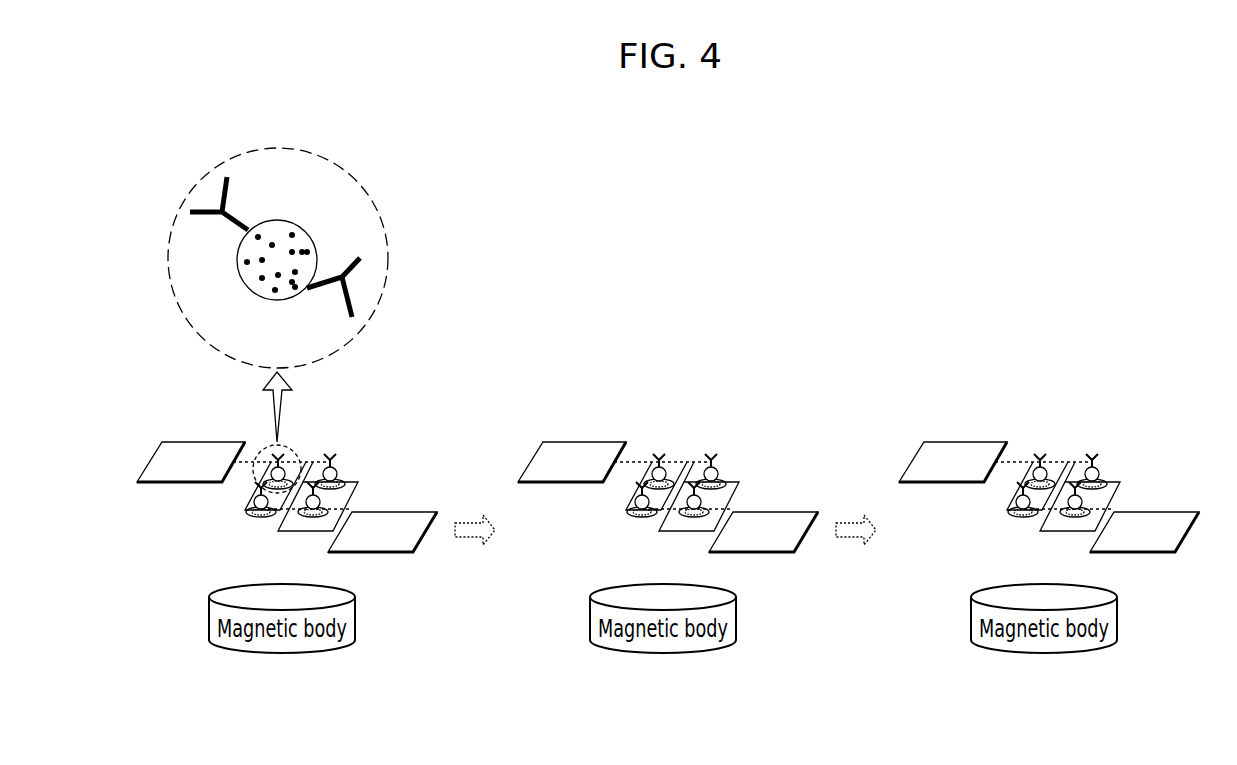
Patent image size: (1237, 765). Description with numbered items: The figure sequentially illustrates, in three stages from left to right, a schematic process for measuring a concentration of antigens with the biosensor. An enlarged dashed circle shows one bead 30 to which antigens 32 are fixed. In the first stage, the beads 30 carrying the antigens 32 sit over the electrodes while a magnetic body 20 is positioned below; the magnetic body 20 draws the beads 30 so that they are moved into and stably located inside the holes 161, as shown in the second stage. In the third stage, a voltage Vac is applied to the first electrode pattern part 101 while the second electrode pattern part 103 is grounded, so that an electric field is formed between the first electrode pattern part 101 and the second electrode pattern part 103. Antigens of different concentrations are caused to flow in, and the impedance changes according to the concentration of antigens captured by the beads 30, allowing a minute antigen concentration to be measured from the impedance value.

The magnetic body 20 is at (283, 654).
The bead 30 is at (305, 227).
The antigen 32 is at (362, 259).
The hole 161 is at (343, 478).
The first electrode pattern part 101 is at (953, 434).
The second electrode pattern part 103 is at (1144, 503).